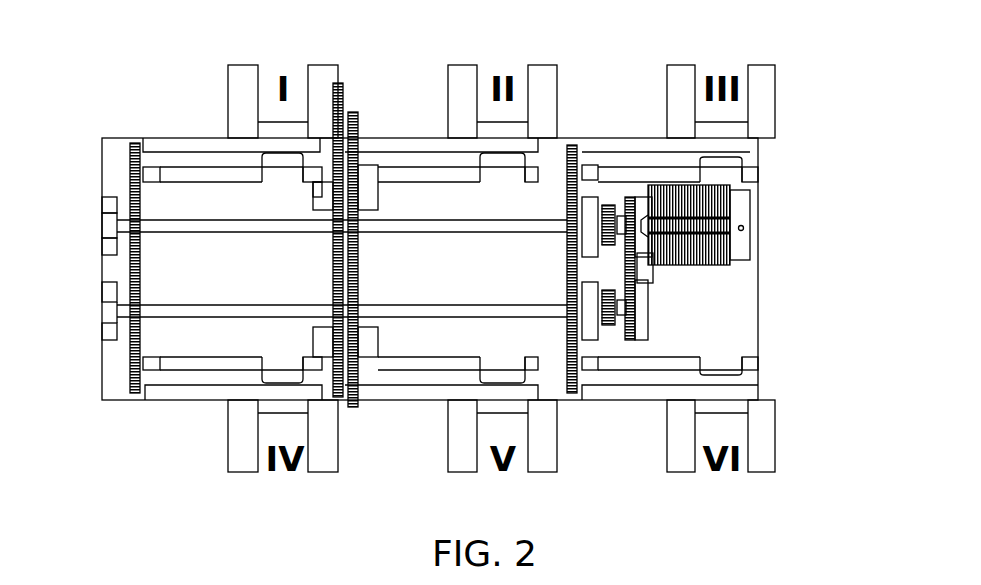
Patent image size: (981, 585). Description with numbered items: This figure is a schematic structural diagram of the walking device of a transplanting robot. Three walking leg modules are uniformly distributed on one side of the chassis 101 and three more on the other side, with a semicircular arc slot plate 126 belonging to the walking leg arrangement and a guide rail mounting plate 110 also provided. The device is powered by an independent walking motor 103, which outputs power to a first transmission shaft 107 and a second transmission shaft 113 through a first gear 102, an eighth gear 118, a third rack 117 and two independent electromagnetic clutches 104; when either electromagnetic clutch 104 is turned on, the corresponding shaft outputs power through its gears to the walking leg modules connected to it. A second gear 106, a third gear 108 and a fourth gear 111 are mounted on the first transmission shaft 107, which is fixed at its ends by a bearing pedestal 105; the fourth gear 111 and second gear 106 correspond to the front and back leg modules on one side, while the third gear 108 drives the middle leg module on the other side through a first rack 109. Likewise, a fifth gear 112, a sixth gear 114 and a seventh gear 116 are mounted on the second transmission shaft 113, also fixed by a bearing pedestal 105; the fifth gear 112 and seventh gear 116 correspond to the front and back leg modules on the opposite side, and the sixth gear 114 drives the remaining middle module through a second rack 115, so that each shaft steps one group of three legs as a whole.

The chassis 101 is at (720, 337).
The first gear 102 is at (660, 268).
The walking motor 103 is at (648, 262).
The electromagnetic clutch 104 is at (637, 340).
The bearing pedestal 105 is at (618, 228).
The second gear 106 is at (733, 233).
The first transmission shaft 107 is at (548, 228).
The third gear 108 is at (358, 212).
The first rack 109 is at (366, 200).
The guide rail mounting plate 110 is at (320, 195).
The fourth gear 111 is at (140, 225).
The fifth gear 112 is at (128, 318).
The second transmission shaft 113 is at (165, 310).
The sixth gear 114 is at (345, 315).
The second rack 115 is at (349, 357).
The seventh gear 116 is at (525, 358).
The third rack 117 is at (570, 317).
The eighth gear 118 is at (620, 340).
The semicircular arc slot plate 126 is at (643, 395).